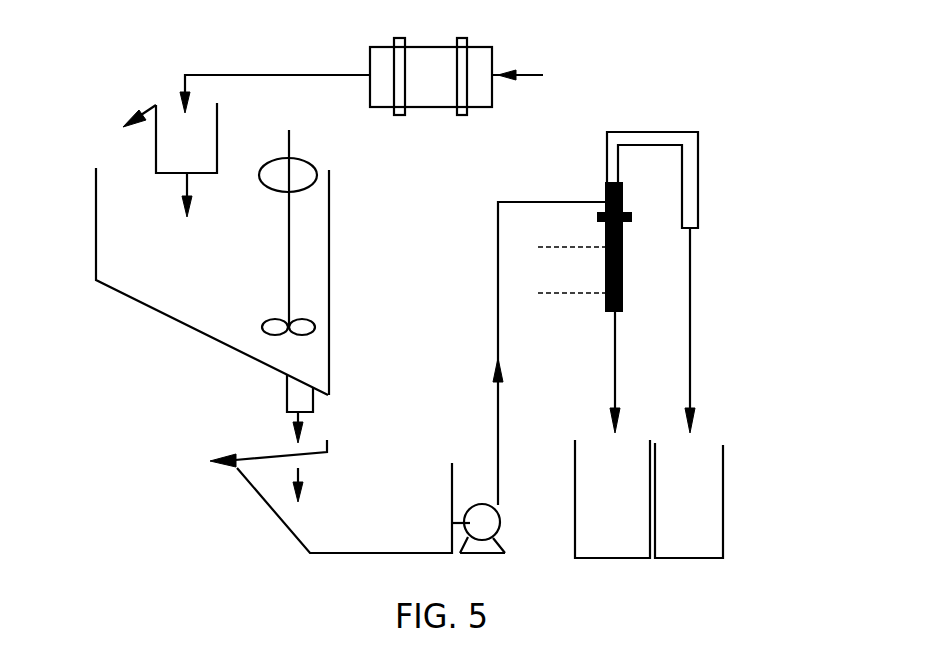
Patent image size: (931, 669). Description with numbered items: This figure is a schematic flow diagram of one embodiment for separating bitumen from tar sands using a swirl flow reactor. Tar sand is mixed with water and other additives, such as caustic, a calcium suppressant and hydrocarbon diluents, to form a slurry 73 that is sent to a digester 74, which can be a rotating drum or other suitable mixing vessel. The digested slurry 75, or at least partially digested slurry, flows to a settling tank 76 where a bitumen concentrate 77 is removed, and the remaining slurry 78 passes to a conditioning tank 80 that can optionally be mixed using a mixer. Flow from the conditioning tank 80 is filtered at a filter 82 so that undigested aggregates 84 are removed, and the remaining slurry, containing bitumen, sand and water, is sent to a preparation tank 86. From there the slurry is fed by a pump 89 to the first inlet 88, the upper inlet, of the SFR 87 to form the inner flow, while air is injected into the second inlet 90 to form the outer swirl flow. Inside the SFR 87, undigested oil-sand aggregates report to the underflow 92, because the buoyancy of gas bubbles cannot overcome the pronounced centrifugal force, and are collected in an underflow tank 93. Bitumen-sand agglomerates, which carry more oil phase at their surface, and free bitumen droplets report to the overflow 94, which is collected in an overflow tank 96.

The slurry 73 is at (530, 63).
The digester 74 is at (423, 108).
The digested slurry 75 is at (275, 78).
The settling tank 76 is at (218, 147).
The bitumen concentrate 77 is at (135, 103).
The remaining slurry 78 is at (205, 195).
The conditioning tank 80 is at (332, 288).
The filter 82 is at (288, 453).
The undigested aggregates 84 is at (247, 458).
The preparation tank 86 is at (448, 475).
The SFR 87 is at (622, 245).
The first inlet 88 is at (550, 353).
The pump 89 is at (500, 518).
The second inlet 90 is at (571, 308).
The underflow 92 is at (596, 372).
The underflow tank 93 is at (612, 499).
The overflow 94 is at (704, 330).
The overflow tank 96 is at (689, 500).